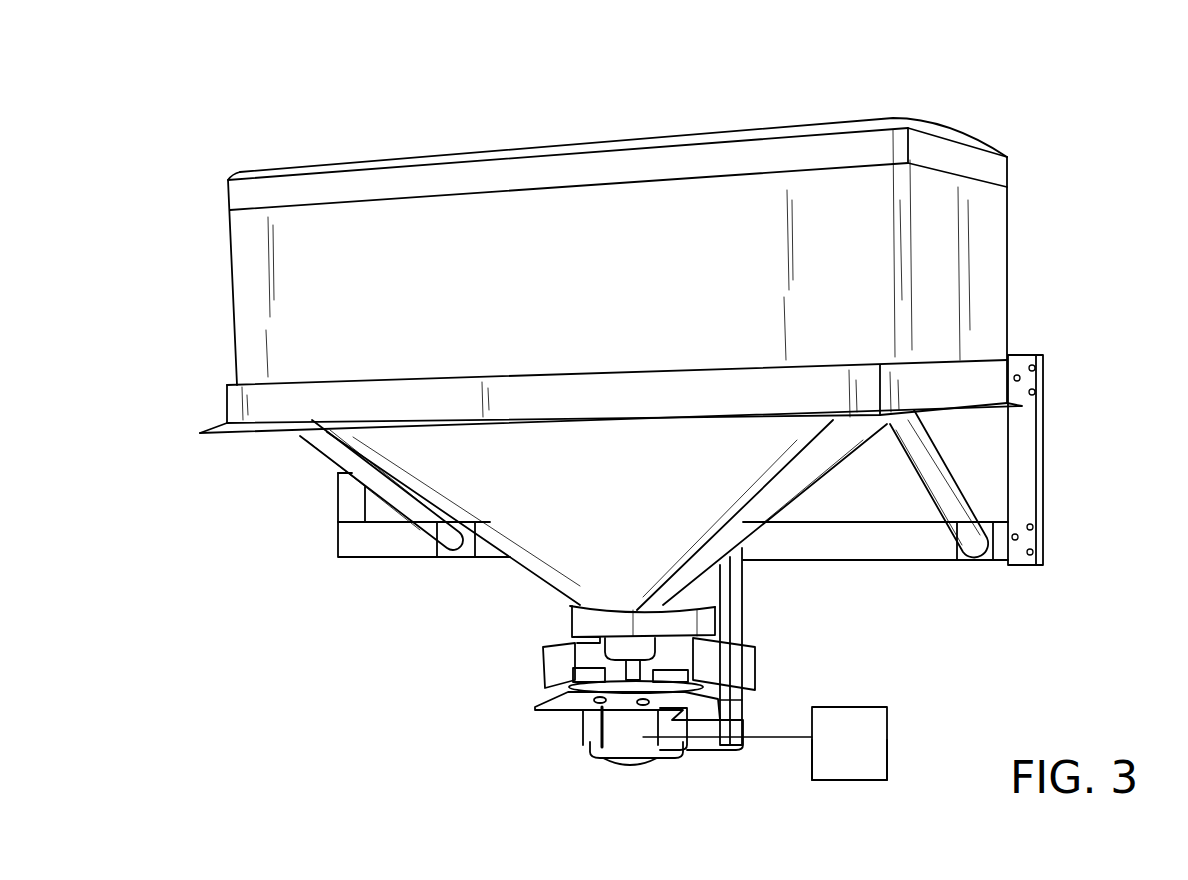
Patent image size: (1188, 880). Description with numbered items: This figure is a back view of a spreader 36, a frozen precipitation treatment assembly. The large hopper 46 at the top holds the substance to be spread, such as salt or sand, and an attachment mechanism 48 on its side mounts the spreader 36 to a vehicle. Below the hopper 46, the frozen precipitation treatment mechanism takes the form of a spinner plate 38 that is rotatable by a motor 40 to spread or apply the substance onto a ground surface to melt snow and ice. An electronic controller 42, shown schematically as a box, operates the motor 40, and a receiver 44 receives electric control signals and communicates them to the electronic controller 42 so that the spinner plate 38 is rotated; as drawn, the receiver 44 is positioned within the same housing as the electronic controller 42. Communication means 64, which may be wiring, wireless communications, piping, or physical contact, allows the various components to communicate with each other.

The spreader 36 is at (1116, 108).
The spinner plate 38 is at (593, 682).
The motor 40 is at (630, 723).
The electronic controller 42 is at (873, 720).
The receiver 44 is at (873, 750).
The hopper 46 is at (298, 272).
The attachment mechanism 48 is at (1040, 377).
The communication means 64 is at (757, 738).